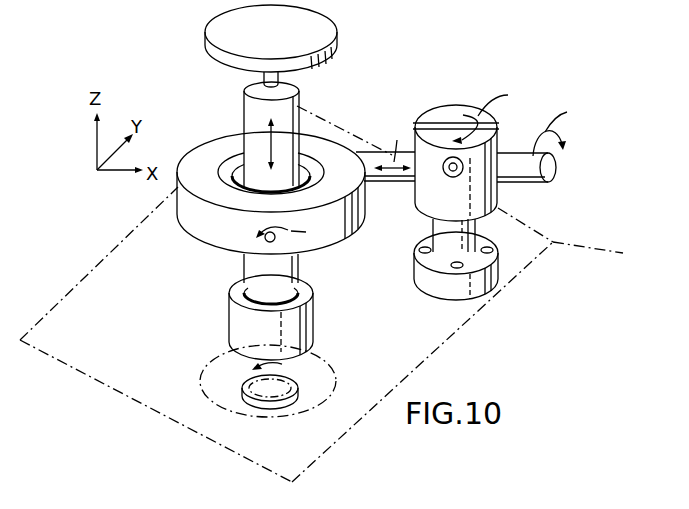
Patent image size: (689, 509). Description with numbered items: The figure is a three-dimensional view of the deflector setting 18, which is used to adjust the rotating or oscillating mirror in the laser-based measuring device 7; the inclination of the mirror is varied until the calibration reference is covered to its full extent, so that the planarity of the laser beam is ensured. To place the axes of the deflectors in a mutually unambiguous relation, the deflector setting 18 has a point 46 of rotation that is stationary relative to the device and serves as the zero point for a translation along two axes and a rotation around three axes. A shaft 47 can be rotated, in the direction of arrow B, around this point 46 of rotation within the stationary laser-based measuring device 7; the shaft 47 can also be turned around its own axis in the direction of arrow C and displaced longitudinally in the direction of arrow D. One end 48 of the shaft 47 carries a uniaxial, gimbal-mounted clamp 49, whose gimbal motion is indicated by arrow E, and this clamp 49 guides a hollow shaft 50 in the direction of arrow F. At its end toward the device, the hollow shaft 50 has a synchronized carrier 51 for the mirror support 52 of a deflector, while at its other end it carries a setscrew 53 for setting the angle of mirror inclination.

The laser-based measuring device 7 is at (476, 359).
The deflector setting 18 is at (432, 56).
The point of rotation 46 is at (476, 230).
The shaft 47 is at (514, 160).
The end of shaft 48 is at (387, 151).
The clamp 49 is at (344, 157).
The hollow shaft 50 is at (299, 99).
The synchronized carrier 51 is at (313, 312).
The mirror support 52 is at (328, 373).
The setscrew 53 is at (322, 33).